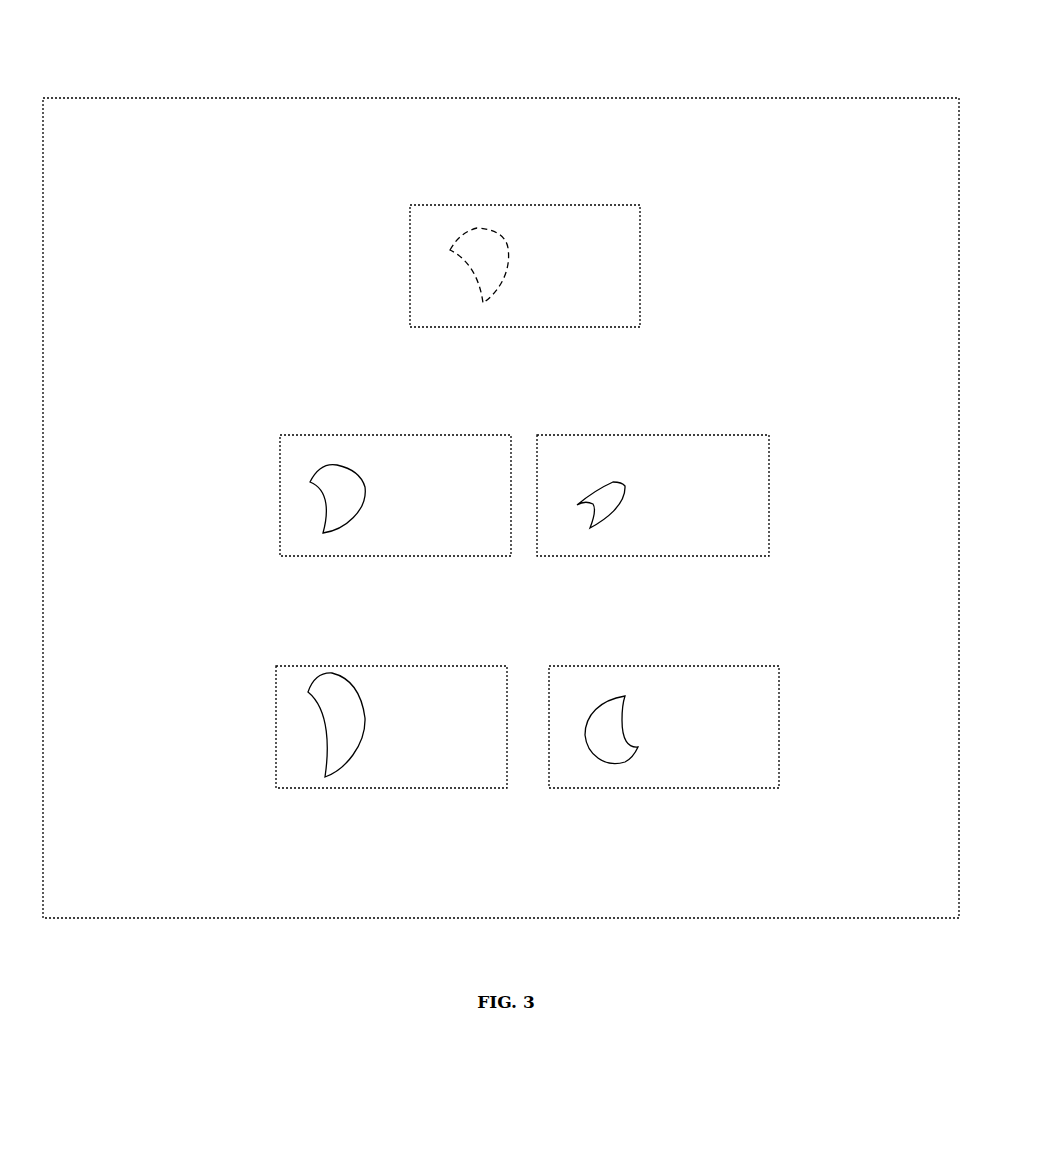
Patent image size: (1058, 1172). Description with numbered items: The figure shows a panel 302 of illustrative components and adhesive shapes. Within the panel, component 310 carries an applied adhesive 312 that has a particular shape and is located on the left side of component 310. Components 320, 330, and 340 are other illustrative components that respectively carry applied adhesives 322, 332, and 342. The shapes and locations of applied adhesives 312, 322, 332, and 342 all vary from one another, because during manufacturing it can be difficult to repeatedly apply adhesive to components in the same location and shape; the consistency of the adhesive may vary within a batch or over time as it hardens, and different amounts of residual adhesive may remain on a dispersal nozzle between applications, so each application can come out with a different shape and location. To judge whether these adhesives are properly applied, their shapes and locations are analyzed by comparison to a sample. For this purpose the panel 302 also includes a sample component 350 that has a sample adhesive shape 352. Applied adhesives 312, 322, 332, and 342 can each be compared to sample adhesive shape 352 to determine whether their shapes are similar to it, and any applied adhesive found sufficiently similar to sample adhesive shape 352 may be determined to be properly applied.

The panel 302 is at (489, 50).
The component 310 is at (370, 435).
The applied adhesive 312 is at (367, 485).
The component 320 is at (613, 435).
The applied adhesive 322 is at (625, 487).
The component 330 is at (369, 665).
The applied adhesive 332 is at (367, 718).
The component 340 is at (623, 667).
The applied adhesive 342 is at (618, 718).
The sample component 350 is at (525, 205).
The sample adhesive shape 352 is at (507, 248).